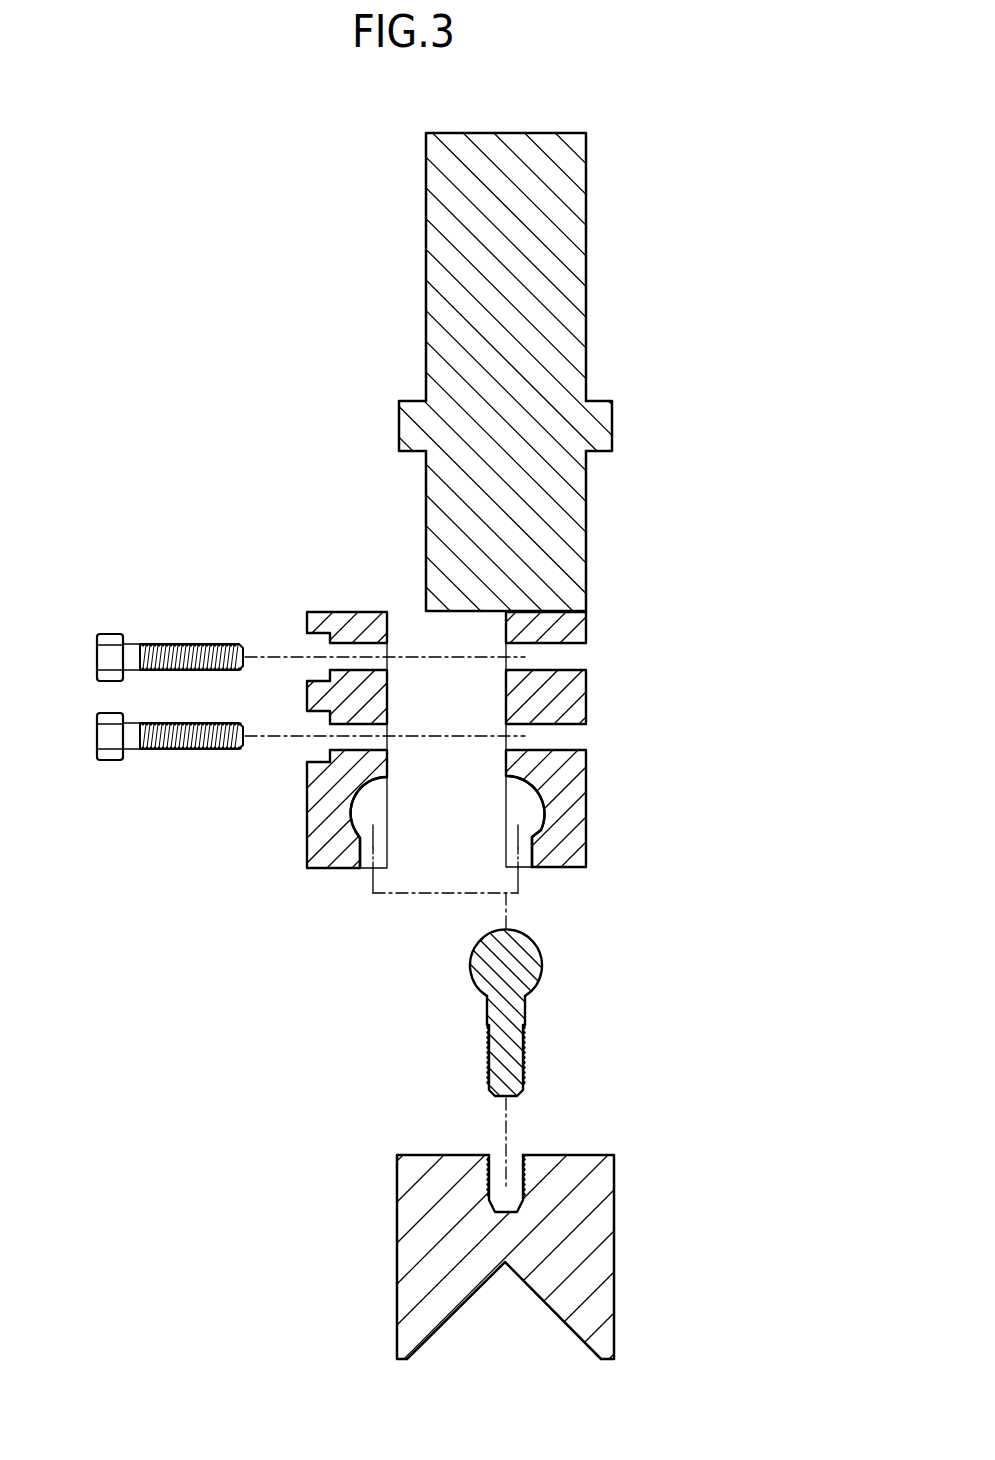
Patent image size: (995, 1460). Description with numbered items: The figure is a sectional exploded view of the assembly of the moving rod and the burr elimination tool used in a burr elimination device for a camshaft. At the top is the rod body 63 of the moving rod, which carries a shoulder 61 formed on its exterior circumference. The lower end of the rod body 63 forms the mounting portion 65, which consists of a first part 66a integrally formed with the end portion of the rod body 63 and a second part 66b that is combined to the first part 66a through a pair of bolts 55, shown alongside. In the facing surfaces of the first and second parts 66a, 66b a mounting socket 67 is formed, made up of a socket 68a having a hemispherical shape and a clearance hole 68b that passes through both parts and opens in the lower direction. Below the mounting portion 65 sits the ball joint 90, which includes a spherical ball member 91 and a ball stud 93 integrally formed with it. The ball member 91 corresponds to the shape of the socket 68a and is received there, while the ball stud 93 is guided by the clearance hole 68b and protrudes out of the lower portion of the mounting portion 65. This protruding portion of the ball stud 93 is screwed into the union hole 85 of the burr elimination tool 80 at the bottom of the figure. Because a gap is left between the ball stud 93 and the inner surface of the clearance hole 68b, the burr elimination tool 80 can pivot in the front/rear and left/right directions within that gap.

The bolts 55 is at (102, 735).
The shoulder 61 is at (605, 417).
The rod body 63 is at (612, 330).
The mounting portion 65 is at (446, 769).
The first part 66a is at (573, 767).
The second part 66b is at (318, 787).
The mounting socket 67 is at (451, 851).
The socket 68a is at (352, 808).
The clearance hole 68b is at (358, 852).
The burr elimination tool 80 is at (506, 1214).
The union hole 85 is at (495, 1175).
The ball joint 90 is at (501, 1012).
The ball member 91 is at (525, 972).
The ball stud 93 is at (508, 1061).